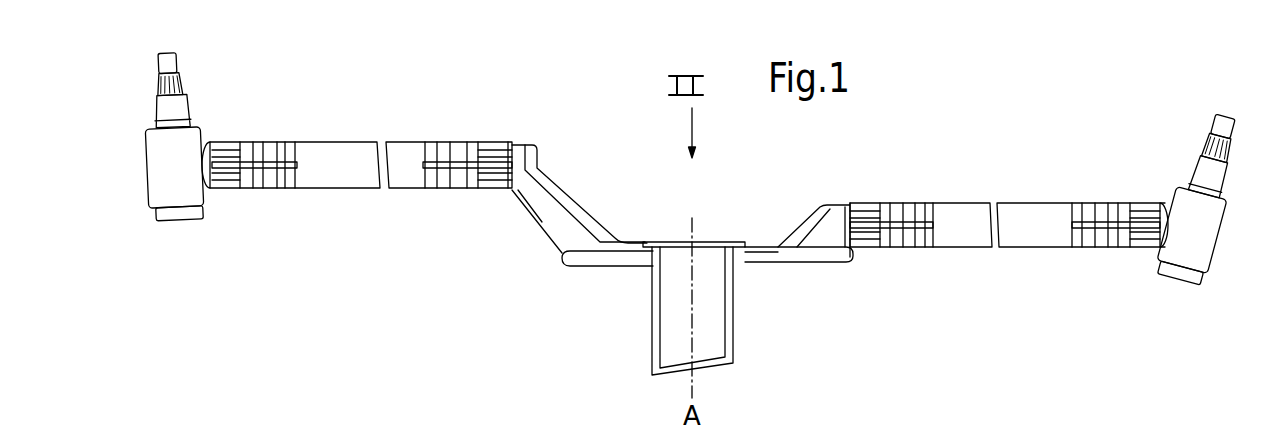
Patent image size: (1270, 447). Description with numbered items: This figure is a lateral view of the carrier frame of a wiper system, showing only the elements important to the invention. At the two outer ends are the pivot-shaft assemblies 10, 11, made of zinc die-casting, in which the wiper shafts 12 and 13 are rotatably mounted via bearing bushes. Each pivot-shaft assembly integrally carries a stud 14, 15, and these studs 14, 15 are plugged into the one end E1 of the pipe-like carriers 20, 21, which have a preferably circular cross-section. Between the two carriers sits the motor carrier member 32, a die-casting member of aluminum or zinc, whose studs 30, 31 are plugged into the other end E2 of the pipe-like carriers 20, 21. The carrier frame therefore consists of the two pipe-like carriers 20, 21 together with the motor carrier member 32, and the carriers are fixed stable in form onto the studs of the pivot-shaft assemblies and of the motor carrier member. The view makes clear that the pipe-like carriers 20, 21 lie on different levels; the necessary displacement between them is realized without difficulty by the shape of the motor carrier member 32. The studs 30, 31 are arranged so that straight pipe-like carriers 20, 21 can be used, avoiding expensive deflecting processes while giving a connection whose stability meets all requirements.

The pivot-shaft assembly 10 is at (221, 95).
The pivot-shaft assembly 11 is at (1149, 149).
The wiper shaft 12 is at (175, 62).
The wiper shaft 13 is at (1217, 125).
The stud 14 is at (218, 173).
The stud 15 is at (1147, 243).
The pipe-like carrier 20 is at (356, 105).
The pipe-like carrier 21 is at (998, 167).
The stud 30 is at (498, 152).
The stud 31 is at (861, 210).
The motor carrier member 32 is at (598, 302).
The one end of pipe-like carrier E1 is at (261, 216).
The other end of pipe-like carrier E2 is at (431, 212).